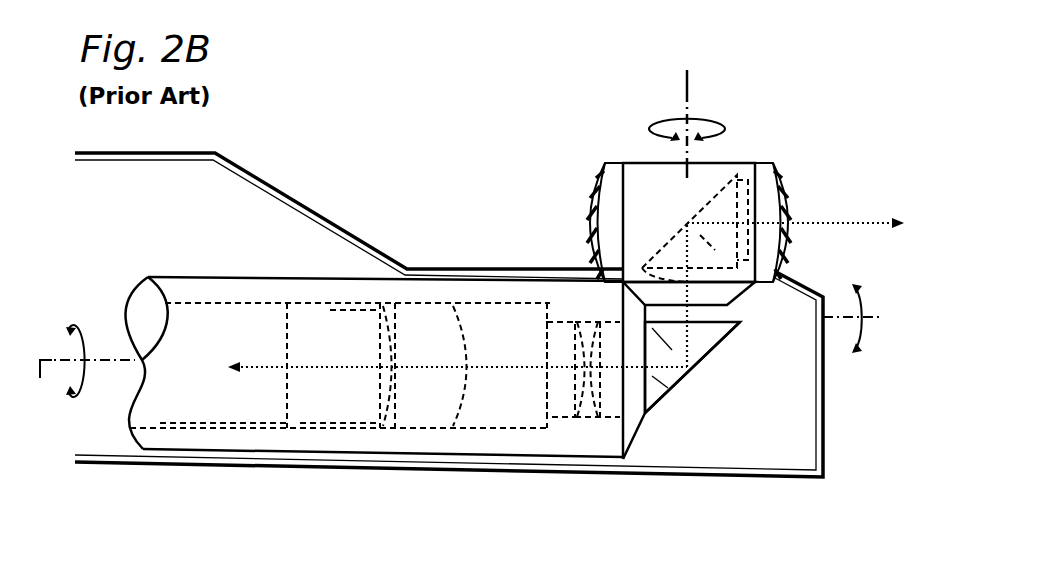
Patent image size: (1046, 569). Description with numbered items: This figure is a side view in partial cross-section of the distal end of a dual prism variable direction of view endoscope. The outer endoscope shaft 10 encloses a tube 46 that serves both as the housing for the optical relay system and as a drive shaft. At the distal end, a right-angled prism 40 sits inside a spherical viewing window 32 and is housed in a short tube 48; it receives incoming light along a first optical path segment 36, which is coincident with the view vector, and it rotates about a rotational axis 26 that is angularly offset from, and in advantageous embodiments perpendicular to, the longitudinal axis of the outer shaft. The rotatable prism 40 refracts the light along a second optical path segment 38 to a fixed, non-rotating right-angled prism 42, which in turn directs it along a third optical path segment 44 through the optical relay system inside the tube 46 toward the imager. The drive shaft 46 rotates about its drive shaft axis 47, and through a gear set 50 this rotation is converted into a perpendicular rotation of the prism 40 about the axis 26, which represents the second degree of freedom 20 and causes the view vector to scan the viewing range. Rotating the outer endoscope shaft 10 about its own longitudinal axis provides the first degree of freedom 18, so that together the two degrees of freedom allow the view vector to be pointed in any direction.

The outer endoscope shaft 10 is at (510, 473).
The first degree of freedom 18 is at (860, 350).
The second degree of freedom 20 is at (727, 128).
The rotational axis 26 is at (688, 82).
The spherical viewing window 32 is at (596, 167).
The first optical path segment 36 is at (825, 222).
The second optical path segment 38 is at (688, 333).
The right-angled prism 40 is at (672, 240).
The fixed right-angled prism 42 is at (697, 362).
The third optical path segment 44 is at (263, 370).
The tube / drive shaft 46 is at (240, 277).
The drive shaft axis 47 is at (77, 386).
The short tube 48 is at (586, 232).
The gear set 50 is at (742, 296).